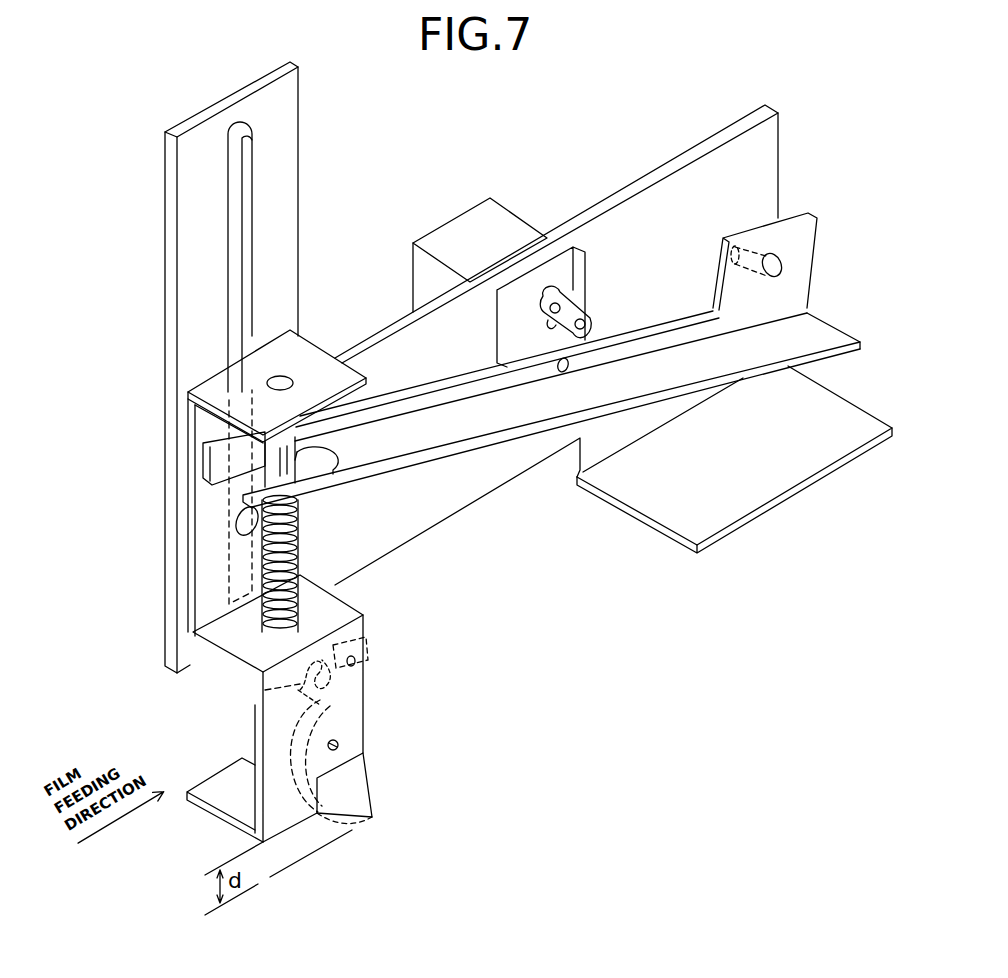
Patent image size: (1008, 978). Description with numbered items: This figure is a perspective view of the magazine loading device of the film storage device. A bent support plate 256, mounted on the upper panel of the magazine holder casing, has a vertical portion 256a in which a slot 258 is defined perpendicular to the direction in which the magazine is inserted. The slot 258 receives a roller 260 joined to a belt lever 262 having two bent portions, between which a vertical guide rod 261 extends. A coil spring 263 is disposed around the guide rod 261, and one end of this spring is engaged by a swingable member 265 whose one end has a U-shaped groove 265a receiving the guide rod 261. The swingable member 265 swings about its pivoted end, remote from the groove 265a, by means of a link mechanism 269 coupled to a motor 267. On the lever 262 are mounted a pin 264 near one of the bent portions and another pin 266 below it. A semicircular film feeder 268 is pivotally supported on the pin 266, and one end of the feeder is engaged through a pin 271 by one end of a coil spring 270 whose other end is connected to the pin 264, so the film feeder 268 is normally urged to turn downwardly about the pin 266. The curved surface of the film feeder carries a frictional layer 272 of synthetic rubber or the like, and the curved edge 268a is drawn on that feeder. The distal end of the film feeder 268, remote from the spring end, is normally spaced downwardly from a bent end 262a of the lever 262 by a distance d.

The bent support plate 256 is at (760, 192).
The vertical portion 256a is at (288, 156).
The slot 258 is at (232, 156).
The roller 260 is at (238, 517).
The vertical guide rod 261 is at (318, 468).
The belt lever 262 is at (305, 360).
The bent end 262a is at (226, 785).
The coil spring 263 is at (270, 575).
The pin 264 is at (360, 650).
The swingable member 265 is at (528, 410).
The U-shaped groove 265a is at (235, 472).
The pin 266 is at (345, 745).
The motor 267 is at (465, 237).
The semicircular film feeder 268 is at (366, 795).
The curved edge 268a is at (366, 815).
The link mechanism 269 is at (588, 328).
The coil spring 270 is at (335, 683).
The pin 271 is at (265, 690).
The frictional layer 272 is at (352, 822).